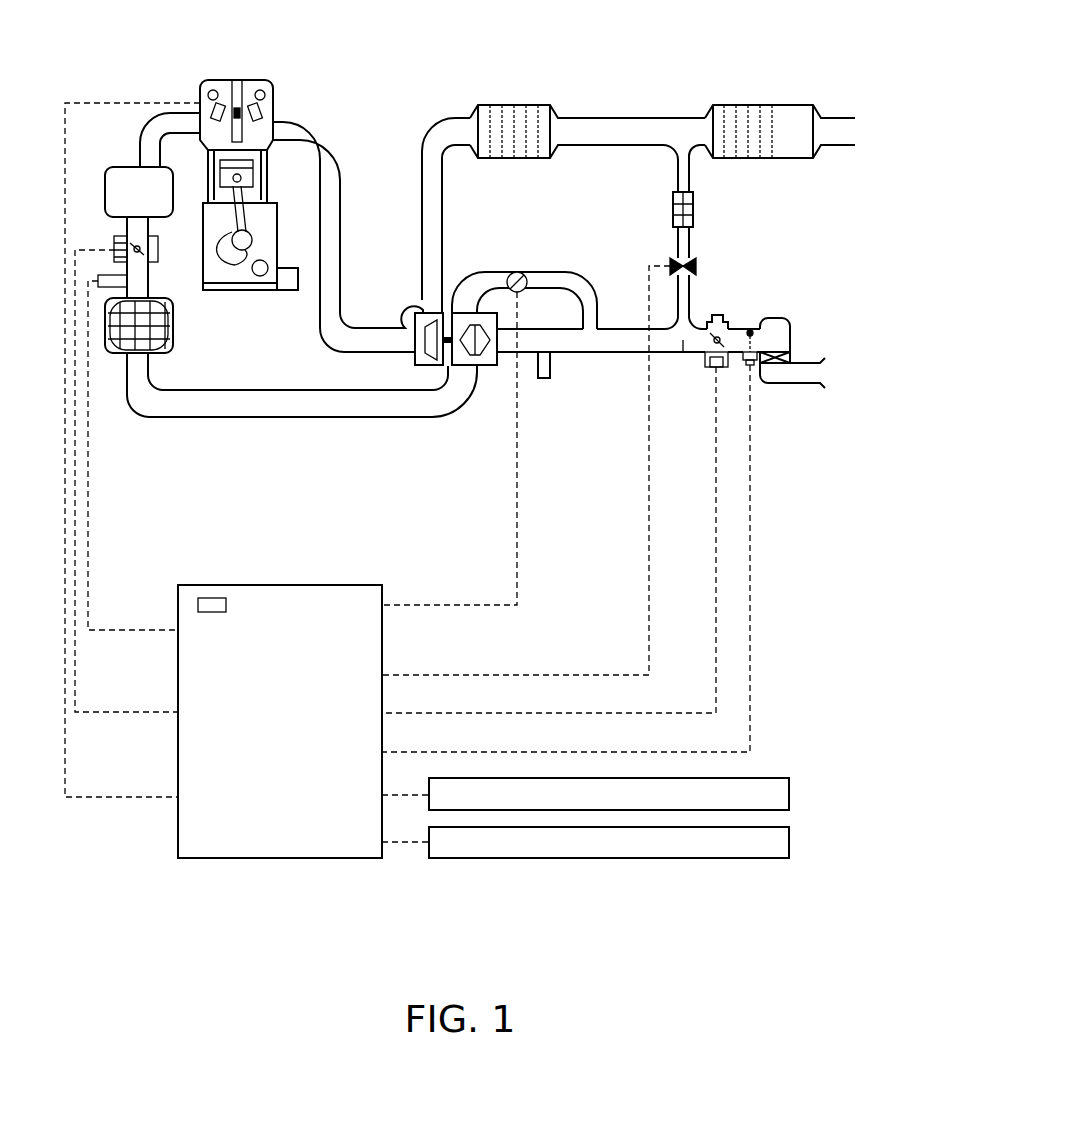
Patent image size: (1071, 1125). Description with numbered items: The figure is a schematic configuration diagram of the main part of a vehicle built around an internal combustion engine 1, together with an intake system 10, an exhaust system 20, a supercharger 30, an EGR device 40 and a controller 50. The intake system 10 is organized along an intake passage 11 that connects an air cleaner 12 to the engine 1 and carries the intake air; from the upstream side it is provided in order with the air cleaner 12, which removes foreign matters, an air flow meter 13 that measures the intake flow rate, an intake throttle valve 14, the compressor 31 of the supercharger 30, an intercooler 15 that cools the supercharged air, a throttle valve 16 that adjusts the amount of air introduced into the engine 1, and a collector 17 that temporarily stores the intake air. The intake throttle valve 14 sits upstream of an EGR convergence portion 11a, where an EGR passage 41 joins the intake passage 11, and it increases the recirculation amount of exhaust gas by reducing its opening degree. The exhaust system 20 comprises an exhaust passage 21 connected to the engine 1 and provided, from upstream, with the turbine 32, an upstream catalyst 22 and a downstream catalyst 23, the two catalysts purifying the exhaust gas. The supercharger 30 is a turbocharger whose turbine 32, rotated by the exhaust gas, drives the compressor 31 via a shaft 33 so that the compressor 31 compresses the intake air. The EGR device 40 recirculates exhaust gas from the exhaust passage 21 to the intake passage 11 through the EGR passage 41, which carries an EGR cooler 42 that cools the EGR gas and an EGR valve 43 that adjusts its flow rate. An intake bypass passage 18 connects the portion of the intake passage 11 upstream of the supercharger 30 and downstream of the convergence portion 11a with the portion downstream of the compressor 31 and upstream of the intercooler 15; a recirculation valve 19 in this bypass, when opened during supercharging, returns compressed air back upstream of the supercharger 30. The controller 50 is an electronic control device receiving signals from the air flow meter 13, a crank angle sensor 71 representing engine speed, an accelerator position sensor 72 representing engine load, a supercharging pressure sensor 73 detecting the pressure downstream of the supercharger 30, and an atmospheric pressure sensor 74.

The internal combustion engine 1 is at (238, 80).
The intake system 10 is at (804, 408).
The intake passage 11 is at (628, 355).
The EGR convergence portion 11a is at (685, 355).
The air cleaner 12 is at (792, 340).
The air flow meter 13 is at (752, 330).
The intake throttle valve 14 is at (717, 315).
The intercooler 15 is at (173, 325).
The throttle valve 16 is at (158, 255).
The collector 17 is at (120, 167).
The intake bypass passage 18 is at (485, 272).
The recirculation valve 19 is at (517, 272).
The exhaust system 20 is at (336, 90).
The exhaust passage 21 is at (340, 200).
The upstream catalyst 22 is at (515, 105).
The downstream catalyst 23 is at (745, 105).
The supercharger 30 is at (442, 413).
The compressor 31 is at (480, 365).
The turbine 32 is at (423, 365).
The shaft 33 is at (447, 365).
The EGR device 40 is at (591, 410).
The EGR passage 41 is at (678, 175).
The EGR cooler 42 is at (673, 210).
The EGR valve 43 is at (697, 262).
The controller 50 is at (280, 739).
The crank angle sensor 71 is at (790, 795).
The accelerator position sensor 72 is at (790, 842).
The supercharging pressure sensor 73 is at (105, 275).
The atmospheric pressure sensor 74 is at (212, 598).